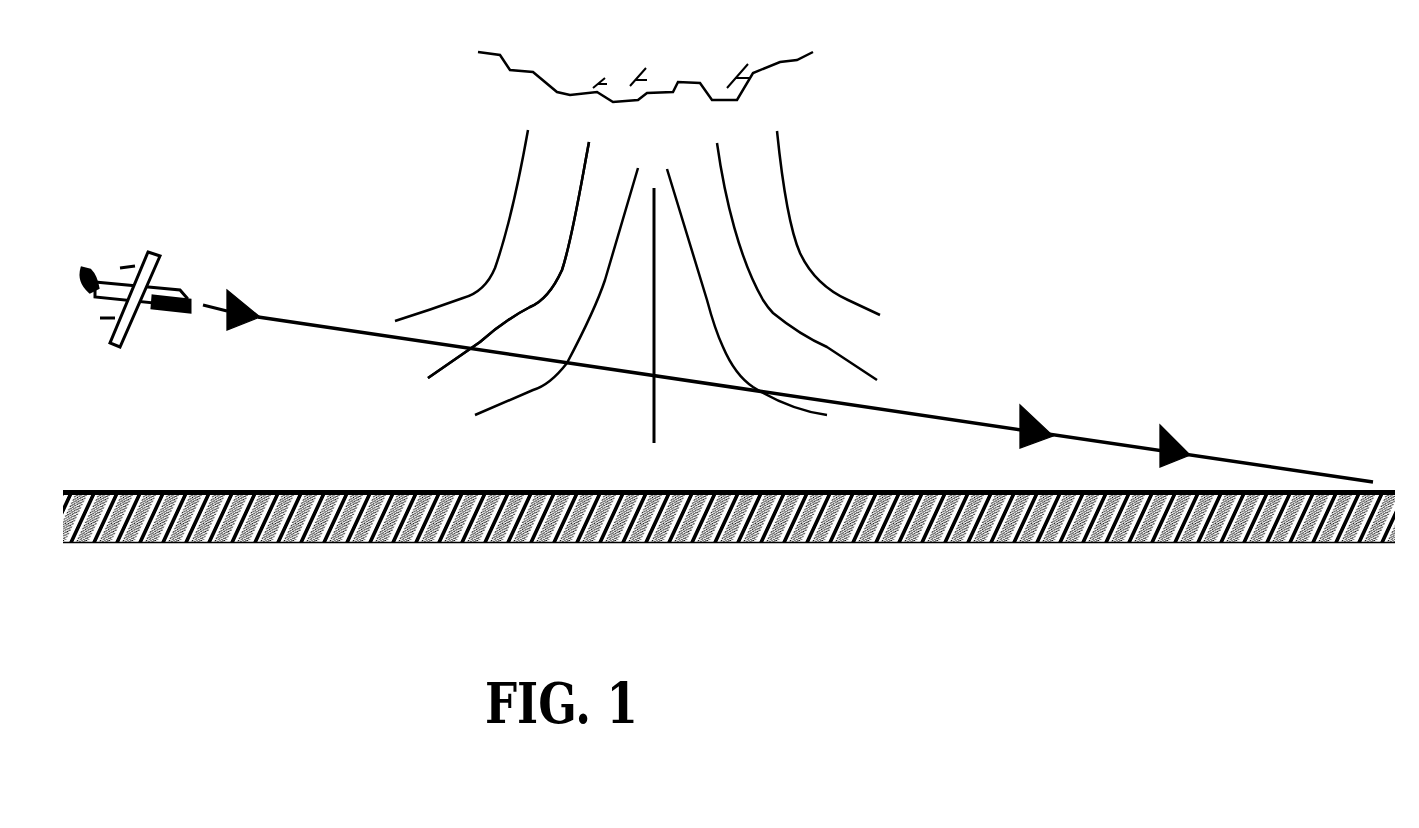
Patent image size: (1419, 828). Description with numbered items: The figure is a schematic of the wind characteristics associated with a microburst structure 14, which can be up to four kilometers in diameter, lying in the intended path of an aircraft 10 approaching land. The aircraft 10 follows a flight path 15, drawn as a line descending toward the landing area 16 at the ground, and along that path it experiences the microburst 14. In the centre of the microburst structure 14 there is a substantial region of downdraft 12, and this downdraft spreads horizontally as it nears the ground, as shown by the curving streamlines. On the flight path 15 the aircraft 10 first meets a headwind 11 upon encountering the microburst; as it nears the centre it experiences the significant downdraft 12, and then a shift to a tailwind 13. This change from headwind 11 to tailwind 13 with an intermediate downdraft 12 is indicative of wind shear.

The aircraft 10 is at (180, 278).
The headwind 11 is at (503, 320).
The downdraft 12 is at (655, 288).
The tailwind 13 is at (768, 380).
The microburst structure 14 is at (520, 140).
The flight path 15 is at (293, 315).
The landing area 16 is at (1383, 488).